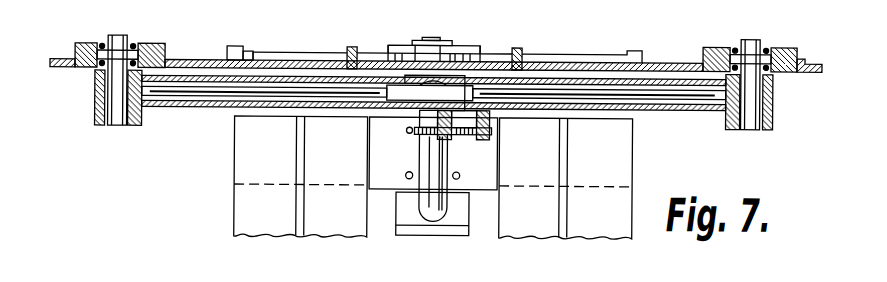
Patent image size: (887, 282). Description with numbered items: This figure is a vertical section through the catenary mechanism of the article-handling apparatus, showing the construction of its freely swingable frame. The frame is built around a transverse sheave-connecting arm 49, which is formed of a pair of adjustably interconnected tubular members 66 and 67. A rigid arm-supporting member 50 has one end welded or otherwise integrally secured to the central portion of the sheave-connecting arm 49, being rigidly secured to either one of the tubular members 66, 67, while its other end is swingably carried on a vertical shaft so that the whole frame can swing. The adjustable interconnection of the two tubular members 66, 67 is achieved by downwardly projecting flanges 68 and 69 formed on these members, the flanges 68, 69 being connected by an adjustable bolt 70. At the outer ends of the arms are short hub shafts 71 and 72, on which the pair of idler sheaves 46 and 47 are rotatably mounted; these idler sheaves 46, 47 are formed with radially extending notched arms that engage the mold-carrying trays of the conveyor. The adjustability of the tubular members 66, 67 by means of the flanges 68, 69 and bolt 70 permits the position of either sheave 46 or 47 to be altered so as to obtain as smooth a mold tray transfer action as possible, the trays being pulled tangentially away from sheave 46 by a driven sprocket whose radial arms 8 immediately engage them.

The radial arms 8 is at (266, 50).
The idler sheave 46 is at (802, 25).
The idler sheave 47 is at (52, 58).
The sheave-connecting arm 49 is at (222, 116).
The arm-supporting member 50 is at (397, 162).
The tubular member 66 is at (188, 105).
The tubular member 67 is at (713, 109).
The flange 68 is at (437, 145).
The flange 69 is at (486, 134).
The adjustable bolt 70 is at (464, 137).
The hub shaft 71 is at (118, 40).
The hub shaft 72 is at (755, 40).